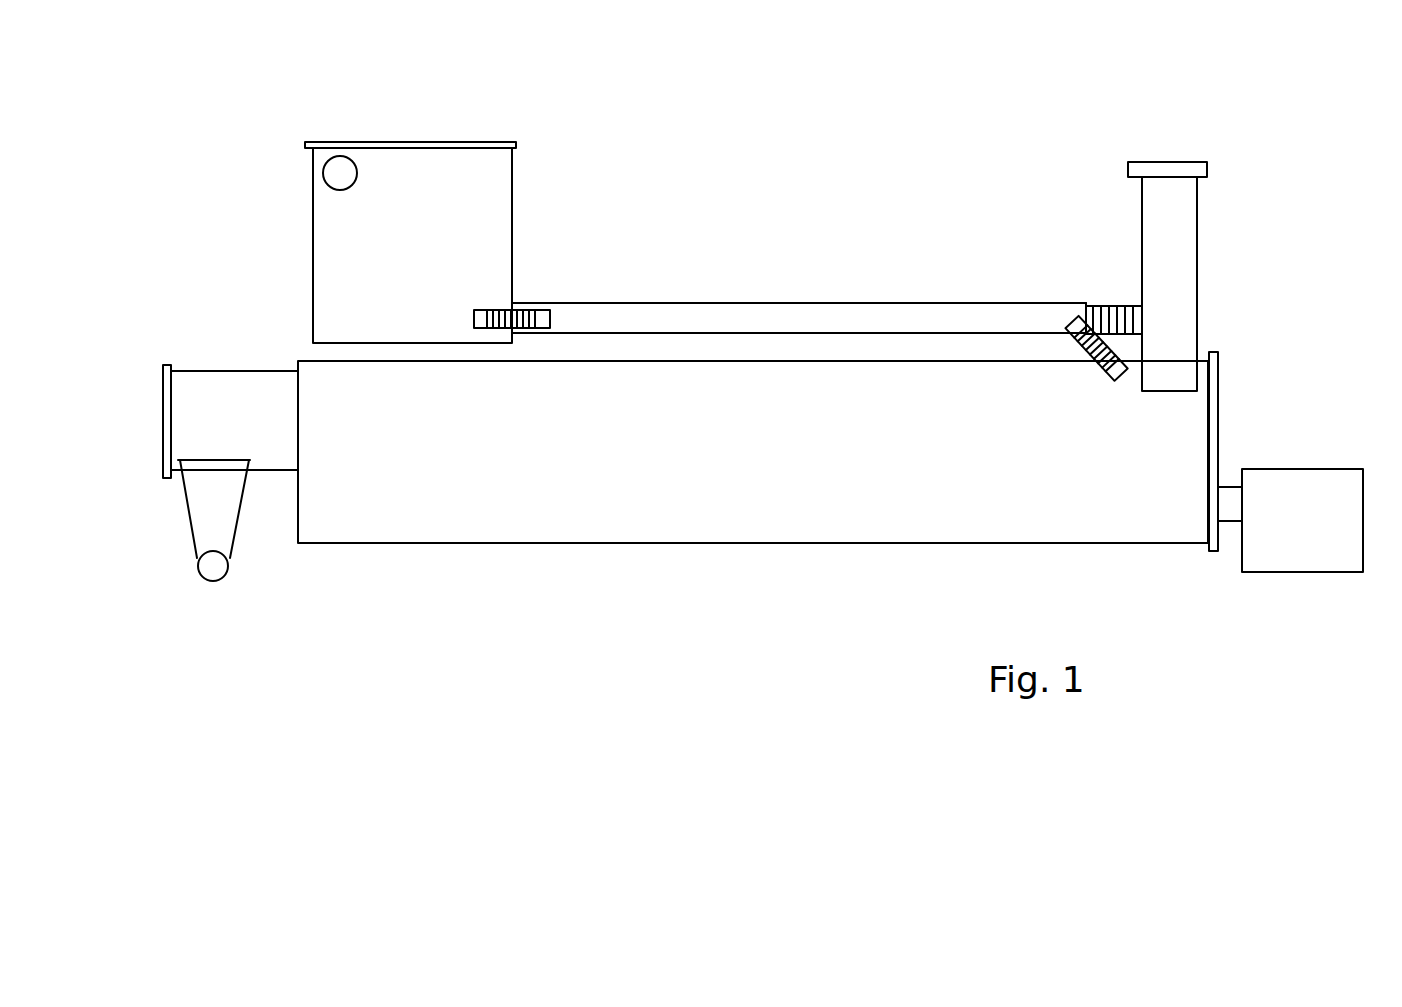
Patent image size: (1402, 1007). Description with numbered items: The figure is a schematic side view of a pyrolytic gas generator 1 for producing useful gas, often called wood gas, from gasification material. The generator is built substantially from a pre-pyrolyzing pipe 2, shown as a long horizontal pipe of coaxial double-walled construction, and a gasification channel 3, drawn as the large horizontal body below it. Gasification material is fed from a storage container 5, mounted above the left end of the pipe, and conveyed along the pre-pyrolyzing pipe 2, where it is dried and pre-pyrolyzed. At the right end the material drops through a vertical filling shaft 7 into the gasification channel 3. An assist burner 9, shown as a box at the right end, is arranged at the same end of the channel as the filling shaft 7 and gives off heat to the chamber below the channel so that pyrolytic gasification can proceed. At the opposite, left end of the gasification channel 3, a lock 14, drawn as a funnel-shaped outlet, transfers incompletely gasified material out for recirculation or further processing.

The pyrolytic gas generator 1 is at (658, 153).
The pre-pyrolyzing pipe 2 is at (762, 320).
The gasification channel 3 is at (523, 512).
The storage container 5 is at (469, 172).
The filling shaft 7 is at (1173, 250).
The assist burner 9 is at (1288, 553).
The lock 14 is at (203, 525).